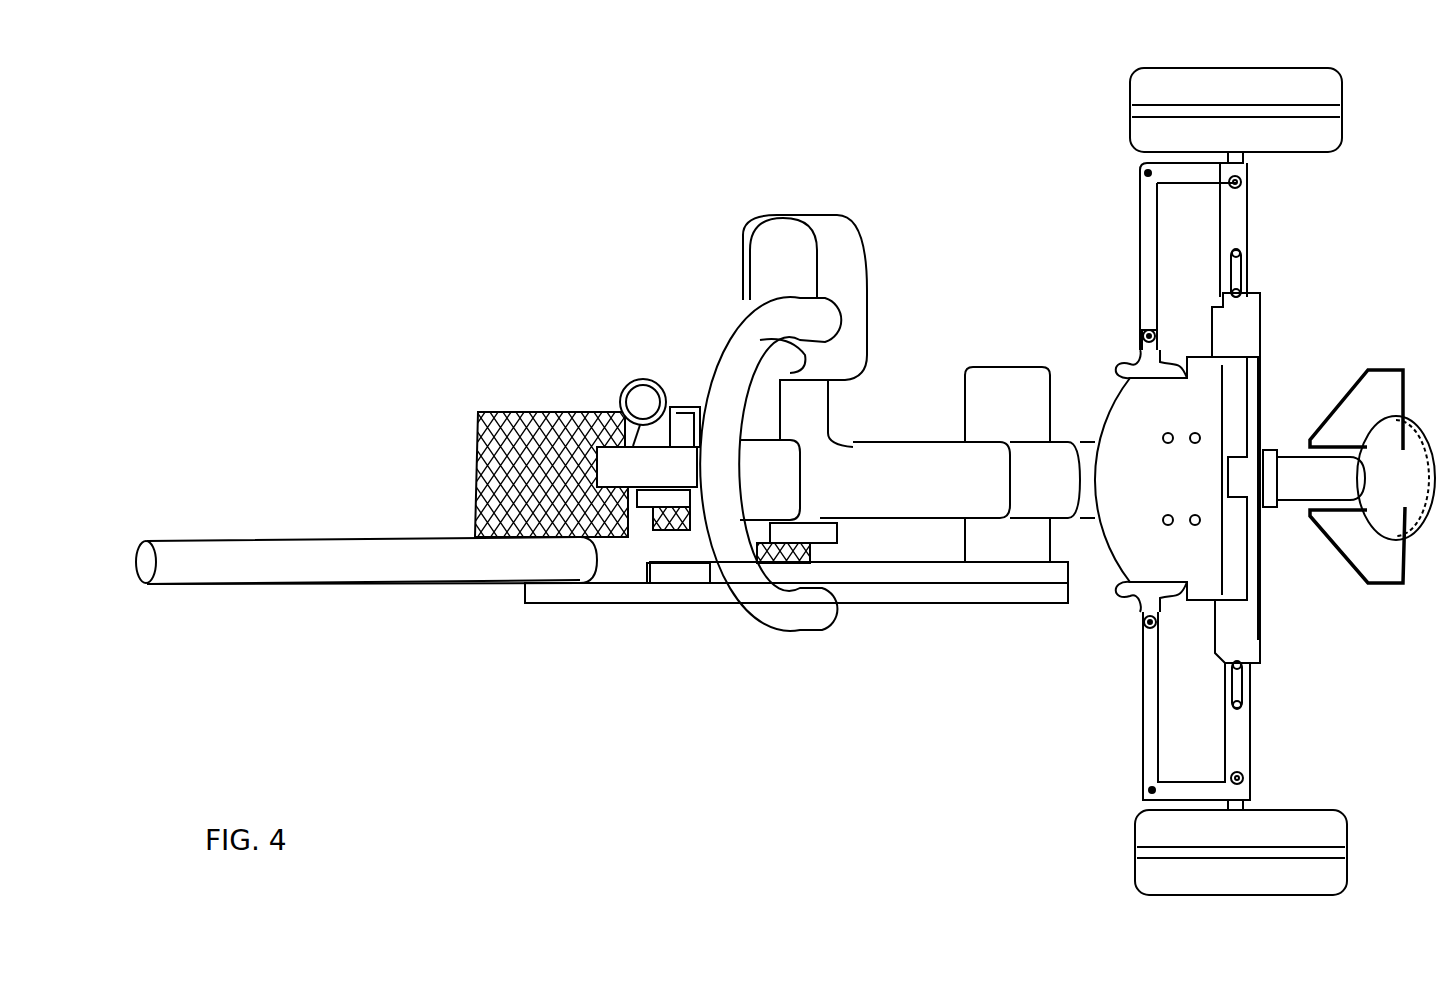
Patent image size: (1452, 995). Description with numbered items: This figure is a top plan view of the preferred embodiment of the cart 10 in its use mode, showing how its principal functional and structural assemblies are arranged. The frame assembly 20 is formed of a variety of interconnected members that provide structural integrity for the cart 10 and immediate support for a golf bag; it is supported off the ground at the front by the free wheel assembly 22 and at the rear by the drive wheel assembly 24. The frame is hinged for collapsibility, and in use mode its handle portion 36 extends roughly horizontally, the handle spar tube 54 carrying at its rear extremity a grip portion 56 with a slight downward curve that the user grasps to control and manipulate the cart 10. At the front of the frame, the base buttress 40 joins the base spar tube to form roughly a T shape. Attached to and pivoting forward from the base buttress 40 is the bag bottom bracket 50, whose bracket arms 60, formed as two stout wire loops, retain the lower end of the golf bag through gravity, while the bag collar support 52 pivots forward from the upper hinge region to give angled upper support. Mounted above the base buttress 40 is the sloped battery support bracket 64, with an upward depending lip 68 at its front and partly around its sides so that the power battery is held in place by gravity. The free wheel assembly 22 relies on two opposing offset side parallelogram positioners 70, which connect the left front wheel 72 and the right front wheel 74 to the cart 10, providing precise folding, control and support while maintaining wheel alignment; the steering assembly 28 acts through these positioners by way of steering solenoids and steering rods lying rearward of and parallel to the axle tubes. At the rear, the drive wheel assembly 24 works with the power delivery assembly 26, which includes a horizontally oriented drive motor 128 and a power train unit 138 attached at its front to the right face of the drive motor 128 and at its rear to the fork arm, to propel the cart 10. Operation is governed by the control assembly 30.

The cart 10 is at (990, 185).
The frame assembly 20 is at (931, 457).
The free wheel assembly 22 is at (1280, 133).
The drive wheel assembly 24 is at (533, 408).
The power delivery assembly 26 is at (912, 592).
The steering assembly 28 is at (1147, 288).
The control assembly 30 is at (784, 270).
The handle portion 36 is at (300, 565).
The base buttress 40 is at (1238, 317).
The bag bottom bracket 50 is at (1349, 478).
The bag collar support 52 is at (768, 610).
The handle spar tube 54 is at (245, 565).
The grip portion 56 is at (177, 565).
The bracket arms 60 is at (1377, 370).
The battery support bracket 64 is at (1171, 481).
The lip 68 is at (1230, 578).
The offset side parallelogram positioner 70 is at (1193, 233).
The left front wheel 72 is at (1137, 90).
The right front wheel 74 is at (1147, 830).
The drive motor 128 is at (1025, 380).
The power train unit 138 is at (1005, 592).